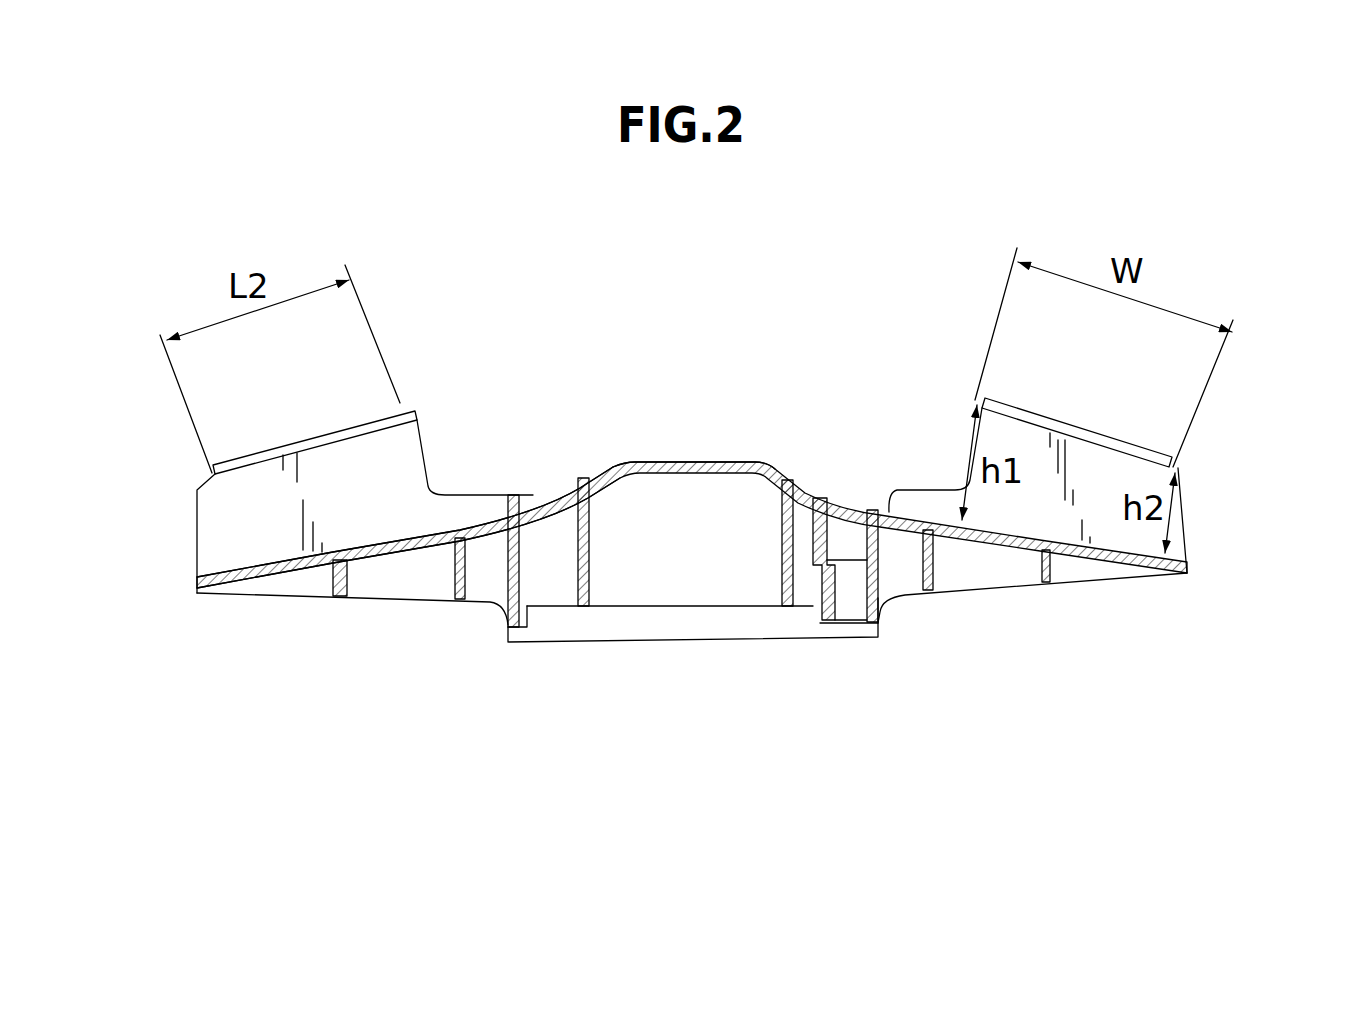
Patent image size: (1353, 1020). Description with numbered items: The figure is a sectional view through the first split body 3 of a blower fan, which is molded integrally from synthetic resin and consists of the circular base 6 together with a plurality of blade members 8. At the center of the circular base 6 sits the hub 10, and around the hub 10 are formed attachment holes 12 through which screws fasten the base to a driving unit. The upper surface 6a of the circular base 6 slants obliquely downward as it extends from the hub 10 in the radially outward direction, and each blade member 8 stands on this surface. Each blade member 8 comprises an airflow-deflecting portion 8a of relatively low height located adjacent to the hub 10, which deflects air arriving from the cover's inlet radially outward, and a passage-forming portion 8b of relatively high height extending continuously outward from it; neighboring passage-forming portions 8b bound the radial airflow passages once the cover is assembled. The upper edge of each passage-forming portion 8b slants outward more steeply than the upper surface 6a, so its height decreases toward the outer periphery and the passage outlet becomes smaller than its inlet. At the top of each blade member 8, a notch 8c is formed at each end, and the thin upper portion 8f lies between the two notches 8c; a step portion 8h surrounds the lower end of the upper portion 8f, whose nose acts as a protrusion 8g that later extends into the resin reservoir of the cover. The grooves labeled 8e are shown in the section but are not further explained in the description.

The first split body 3 is at (693, 594).
The circular base 6 is at (692, 528).
The upper surface of the circular base 6a is at (433, 527).
The blade member 8 is at (703, 494).
The airflow-deflecting portion 8a is at (533, 502).
The passage-forming portion 8b is at (368, 473).
The notch 8c is at (205, 487).
The groove portion 8e is at (293, 437).
The upper portion of the blade member 8f is at (315, 440).
The protrusion 8g is at (242, 463).
The step portion 8h is at (357, 440).
The hub 10 is at (685, 458).
The attachment hole 12 is at (845, 530).